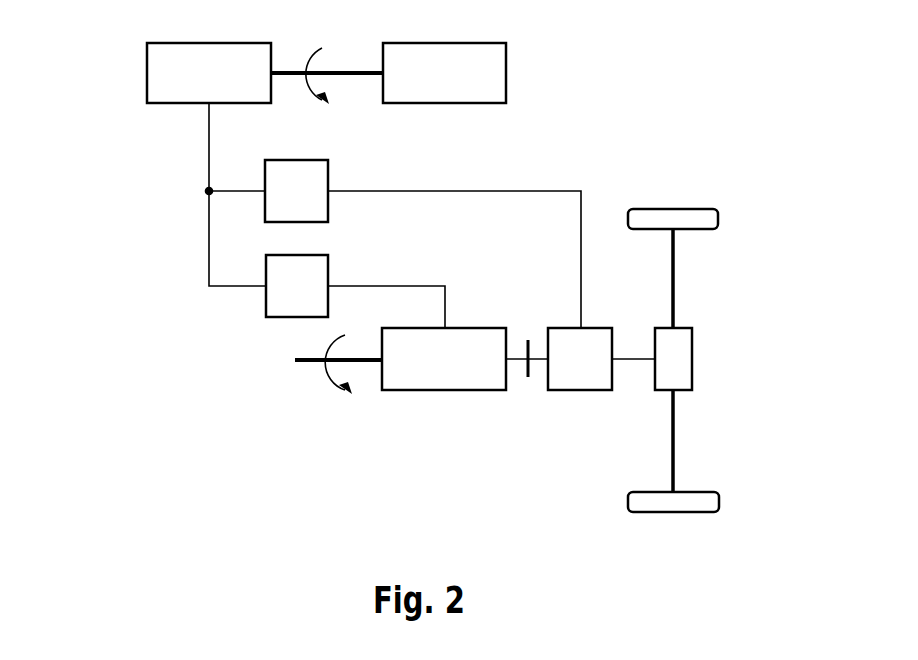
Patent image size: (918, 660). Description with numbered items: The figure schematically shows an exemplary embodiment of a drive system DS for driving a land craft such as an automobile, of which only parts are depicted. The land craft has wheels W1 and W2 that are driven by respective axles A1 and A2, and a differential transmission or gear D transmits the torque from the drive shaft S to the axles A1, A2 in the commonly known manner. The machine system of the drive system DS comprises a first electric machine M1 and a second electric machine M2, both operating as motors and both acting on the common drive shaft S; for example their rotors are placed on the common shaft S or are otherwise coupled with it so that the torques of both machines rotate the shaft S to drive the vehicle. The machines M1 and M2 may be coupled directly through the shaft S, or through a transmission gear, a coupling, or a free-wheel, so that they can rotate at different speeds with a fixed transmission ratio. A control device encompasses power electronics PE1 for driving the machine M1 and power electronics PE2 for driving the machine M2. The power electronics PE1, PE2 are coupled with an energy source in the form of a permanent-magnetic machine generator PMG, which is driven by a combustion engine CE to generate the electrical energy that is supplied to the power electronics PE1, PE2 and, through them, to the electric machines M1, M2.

The permanent-magnetic machine generator PMG is at (147, 72).
The combustion engine CE is at (506, 72).
The power electronics PE1 is at (328, 172).
The power electronics PE2 is at (328, 268).
The drive shaft S is at (309, 364).
The second electric machine M2 is at (433, 390).
The first electric machine M1 is at (575, 390).
The drive system DS is at (692, 123).
The wheel W1 is at (673, 209).
The axle A1 is at (676, 280).
The differential transmission or gear D is at (692, 358).
The axle A2 is at (677, 440).
The wheel W2 is at (660, 512).